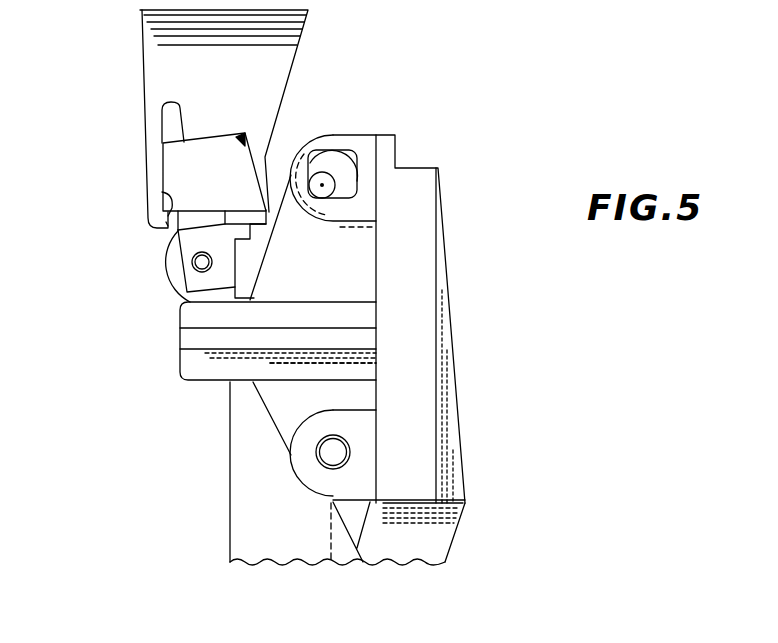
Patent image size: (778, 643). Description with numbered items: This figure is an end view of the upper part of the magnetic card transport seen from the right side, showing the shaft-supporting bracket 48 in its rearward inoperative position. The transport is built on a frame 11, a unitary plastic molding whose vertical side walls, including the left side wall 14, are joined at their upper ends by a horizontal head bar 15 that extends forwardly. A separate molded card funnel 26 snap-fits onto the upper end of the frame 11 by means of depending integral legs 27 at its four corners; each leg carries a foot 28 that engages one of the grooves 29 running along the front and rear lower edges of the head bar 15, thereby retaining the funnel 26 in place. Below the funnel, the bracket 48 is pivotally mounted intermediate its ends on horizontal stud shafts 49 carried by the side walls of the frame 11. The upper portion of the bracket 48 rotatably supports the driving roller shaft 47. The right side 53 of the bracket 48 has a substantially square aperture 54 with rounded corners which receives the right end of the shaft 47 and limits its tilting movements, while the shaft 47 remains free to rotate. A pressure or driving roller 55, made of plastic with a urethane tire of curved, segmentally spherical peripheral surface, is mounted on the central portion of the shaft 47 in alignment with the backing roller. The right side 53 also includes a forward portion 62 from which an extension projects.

The frame 11 is at (266, 523).
The left side wall 14 is at (250, 490).
The horizontal head bar 15 is at (177, 163).
The card funnel 26 is at (141, 33).
The depending integral legs 27 is at (155, 125).
The feet 28 is at (160, 227).
The grooves 29 is at (170, 200).
The driving roller shaft 47 is at (330, 190).
The bracket 48 is at (412, 420).
The horizontal stud shafts 49 is at (328, 450).
The right side of bracket 53 is at (352, 375).
The square aperture 54 is at (340, 173).
The driving roller 55 is at (328, 186).
The forward portion 62 is at (200, 340).